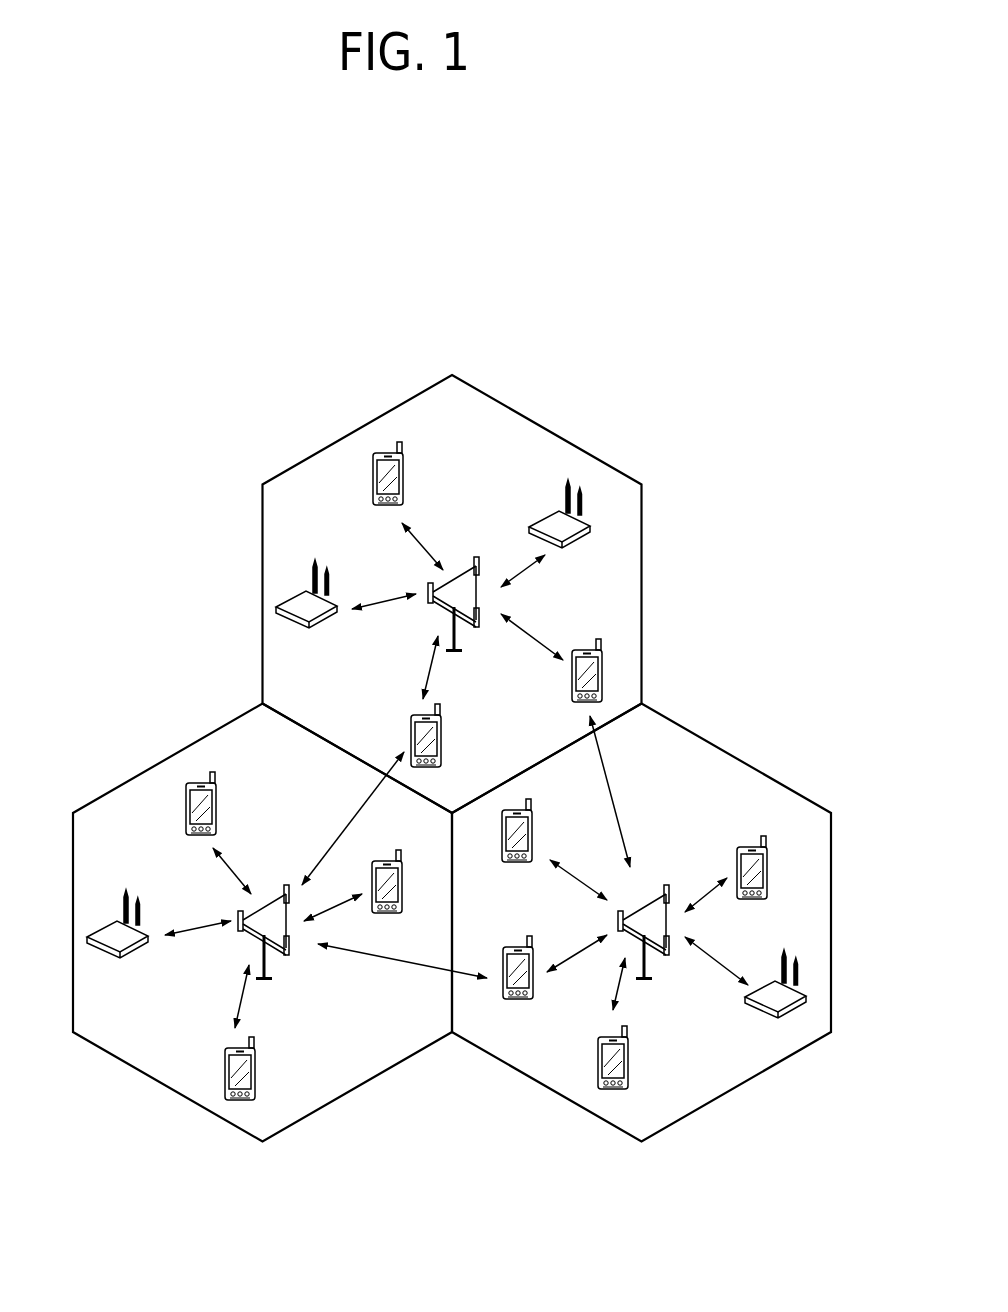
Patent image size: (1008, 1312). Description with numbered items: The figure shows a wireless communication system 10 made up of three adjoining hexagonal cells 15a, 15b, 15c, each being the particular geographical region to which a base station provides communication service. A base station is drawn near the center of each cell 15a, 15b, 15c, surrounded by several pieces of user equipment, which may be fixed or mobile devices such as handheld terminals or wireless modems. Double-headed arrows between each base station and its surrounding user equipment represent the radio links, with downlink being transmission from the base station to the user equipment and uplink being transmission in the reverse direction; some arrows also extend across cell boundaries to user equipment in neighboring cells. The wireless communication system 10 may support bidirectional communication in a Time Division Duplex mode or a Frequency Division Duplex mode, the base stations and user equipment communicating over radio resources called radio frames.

The wireless communication system 10 is at (721, 491).
The cell 15a is at (642, 582).
The cell 15b is at (762, 772).
The cell 15c is at (143, 769).